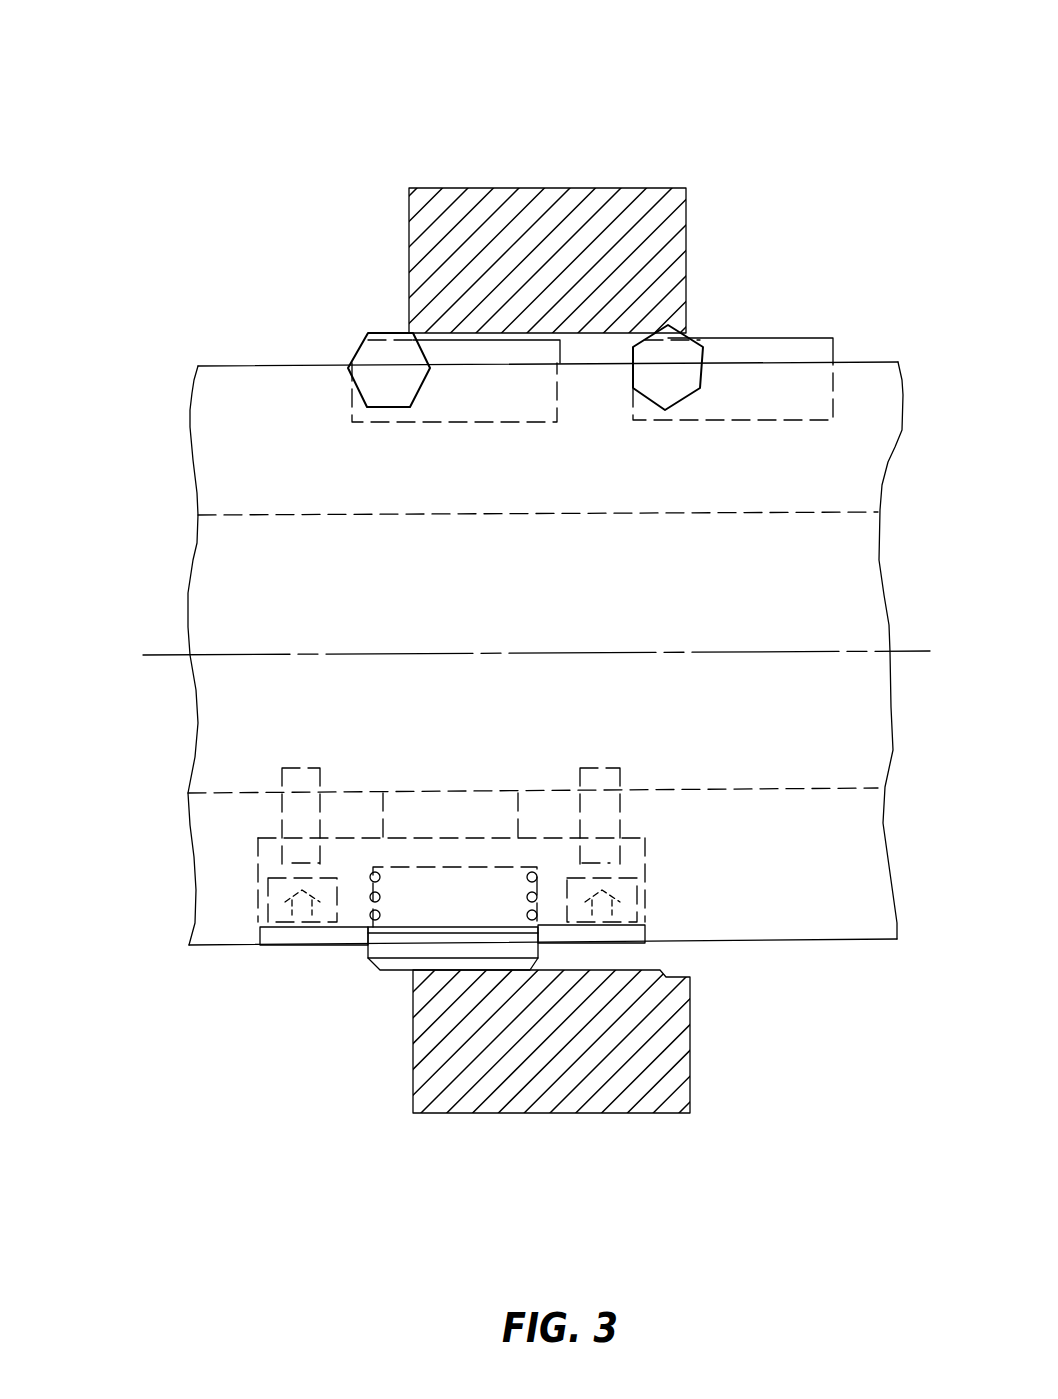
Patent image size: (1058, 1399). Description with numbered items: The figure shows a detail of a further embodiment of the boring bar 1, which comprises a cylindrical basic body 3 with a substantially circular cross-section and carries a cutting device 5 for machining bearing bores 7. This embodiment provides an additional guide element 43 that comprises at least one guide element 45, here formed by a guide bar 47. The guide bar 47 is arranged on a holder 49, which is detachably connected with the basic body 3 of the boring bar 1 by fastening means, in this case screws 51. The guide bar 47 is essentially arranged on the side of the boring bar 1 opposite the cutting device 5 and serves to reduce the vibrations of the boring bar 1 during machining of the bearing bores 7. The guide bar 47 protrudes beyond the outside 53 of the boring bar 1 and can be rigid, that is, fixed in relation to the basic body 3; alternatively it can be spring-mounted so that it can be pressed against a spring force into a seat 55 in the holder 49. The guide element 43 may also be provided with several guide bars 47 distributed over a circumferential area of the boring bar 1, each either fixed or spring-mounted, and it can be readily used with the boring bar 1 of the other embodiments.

The boring bar 1 is at (232, 198).
The basic body 3 is at (292, 613).
The cutting device 5 is at (372, 315).
The bearing bore 7 is at (607, 968).
The guide element 43 is at (460, 949).
The guide element 45 is at (426, 998).
The guide bar 47 is at (397, 952).
The holder 49 is at (284, 955).
The screws 51 is at (303, 810).
The outside 53 is at (722, 940).
The seat 55 is at (418, 964).